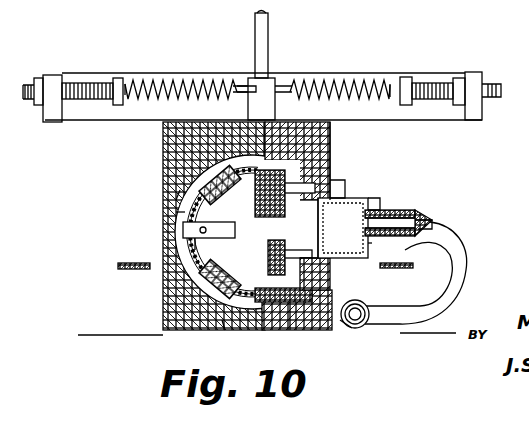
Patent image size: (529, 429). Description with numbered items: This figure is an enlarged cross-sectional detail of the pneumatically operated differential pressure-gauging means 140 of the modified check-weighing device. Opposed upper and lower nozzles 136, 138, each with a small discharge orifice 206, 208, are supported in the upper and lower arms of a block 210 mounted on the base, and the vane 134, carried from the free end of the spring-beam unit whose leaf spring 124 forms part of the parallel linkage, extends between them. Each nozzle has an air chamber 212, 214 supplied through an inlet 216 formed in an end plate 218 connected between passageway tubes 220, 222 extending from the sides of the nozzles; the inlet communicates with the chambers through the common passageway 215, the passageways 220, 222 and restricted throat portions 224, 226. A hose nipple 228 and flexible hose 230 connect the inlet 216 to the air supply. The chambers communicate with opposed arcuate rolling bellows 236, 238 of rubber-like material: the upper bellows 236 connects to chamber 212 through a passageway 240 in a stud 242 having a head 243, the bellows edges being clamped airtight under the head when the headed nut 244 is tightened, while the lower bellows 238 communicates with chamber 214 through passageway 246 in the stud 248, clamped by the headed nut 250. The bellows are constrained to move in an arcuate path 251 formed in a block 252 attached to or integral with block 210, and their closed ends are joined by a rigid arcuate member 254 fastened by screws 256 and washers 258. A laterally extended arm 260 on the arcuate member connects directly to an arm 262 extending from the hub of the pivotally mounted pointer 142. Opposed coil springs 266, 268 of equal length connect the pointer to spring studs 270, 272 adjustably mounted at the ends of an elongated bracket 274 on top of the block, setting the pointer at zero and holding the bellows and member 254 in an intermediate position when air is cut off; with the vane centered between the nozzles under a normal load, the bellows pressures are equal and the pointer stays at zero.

The cantilever leaf spring 124 is at (118, 266).
The vane 134 is at (343, 228).
The upper nozzle 136 is at (270, 195).
The lower nozzle 138 is at (269, 267).
The pneumatically operated differential pressure-gauging means 140 is at (437, 156).
The pointer 142 is at (268, 26).
The discharge orifice 206 is at (343, 228).
The discharge orifice 208 is at (343, 228).
The block 210 is at (322, 126).
The upper air chamber 212 is at (322, 172).
The lower air chamber 214 is at (370, 304).
The common passageway 215 is at (370, 258).
The inlet 216 is at (385, 214).
The end plate 218 is at (400, 212).
The passageway tube 220 is at (362, 205).
The passageway tube 222 is at (405, 272).
The restricted throat portion 224 is at (330, 186).
The restricted throat portion 226 is at (356, 278).
The hose nipple 228 is at (430, 224).
The flexible hose 230 is at (462, 272).
The upper bellows 236 is at (176, 153).
The lower bellows 238 is at (165, 310).
The passageway 240 is at (225, 225).
The stud 242 is at (297, 161).
The head 243 is at (214, 226).
The headed nut 244 is at (327, 152).
The passageway 246 is at (304, 330).
The stud 248 is at (290, 330).
The headed nut 250 is at (348, 320).
The arcuate path 251 is at (178, 190).
The block 252 is at (200, 164).
The rigid arcuate member 254 is at (178, 211).
The screws 256 is at (226, 330).
The washers 258 is at (207, 311).
The laterally extended arm 260 is at (183, 229).
The arm 262 is at (195, 242).
The coil spring 266 is at (185, 78).
The coil spring 268 is at (355, 78).
The spring stud 270 is at (103, 61).
The spring stud 272 is at (432, 80).
The elongated bracket 274 is at (243, 74).